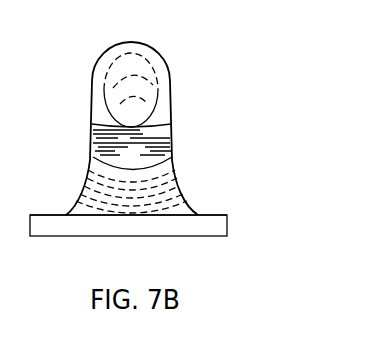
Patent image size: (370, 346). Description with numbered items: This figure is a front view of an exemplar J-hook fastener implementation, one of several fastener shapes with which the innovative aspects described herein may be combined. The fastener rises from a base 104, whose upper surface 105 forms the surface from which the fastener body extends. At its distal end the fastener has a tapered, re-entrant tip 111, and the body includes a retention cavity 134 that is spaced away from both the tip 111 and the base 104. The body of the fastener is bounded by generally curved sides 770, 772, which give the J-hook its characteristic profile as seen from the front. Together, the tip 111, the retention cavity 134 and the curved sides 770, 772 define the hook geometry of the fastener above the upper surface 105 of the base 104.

The base 104 is at (198, 227).
The upper surface of base 105 is at (193, 212).
The tip 111 is at (135, 115).
The retention cavity 134 is at (93, 157).
The curved side 770 is at (92, 125).
The curved side 772 is at (173, 160).